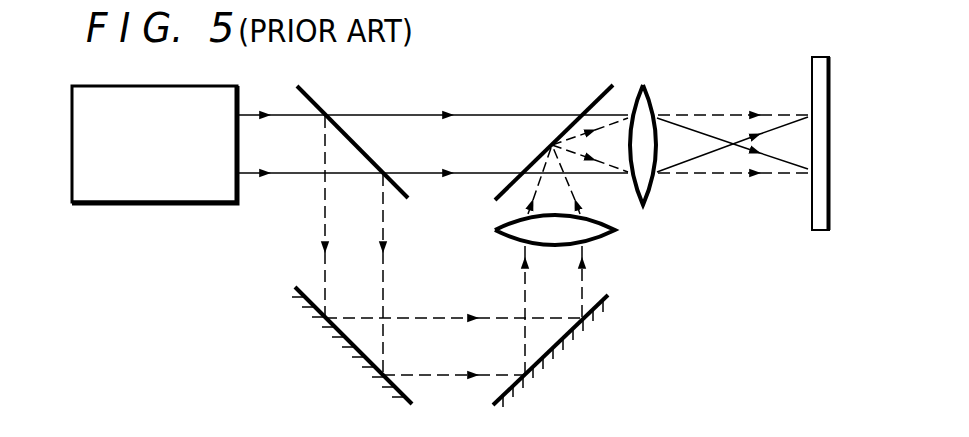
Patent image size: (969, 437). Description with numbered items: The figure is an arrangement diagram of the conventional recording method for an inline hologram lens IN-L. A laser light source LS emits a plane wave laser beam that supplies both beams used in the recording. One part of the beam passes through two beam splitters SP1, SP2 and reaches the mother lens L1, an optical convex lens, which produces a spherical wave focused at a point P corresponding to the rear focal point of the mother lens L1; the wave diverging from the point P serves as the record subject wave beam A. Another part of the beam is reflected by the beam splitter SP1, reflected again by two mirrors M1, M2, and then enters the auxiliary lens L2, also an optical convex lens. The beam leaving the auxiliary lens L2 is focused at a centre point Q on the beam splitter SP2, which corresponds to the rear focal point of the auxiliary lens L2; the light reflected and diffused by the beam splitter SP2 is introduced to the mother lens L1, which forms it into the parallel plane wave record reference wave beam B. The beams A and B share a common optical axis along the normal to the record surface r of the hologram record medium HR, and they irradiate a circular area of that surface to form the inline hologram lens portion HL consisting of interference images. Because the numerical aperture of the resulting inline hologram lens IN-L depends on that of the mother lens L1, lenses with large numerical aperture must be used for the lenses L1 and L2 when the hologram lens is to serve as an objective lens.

The laser light source LS is at (160, 204).
The beam splitter SP1 is at (316, 101).
The beam splitter SP2 is at (607, 86).
The centre point Q is at (548, 145).
The mother lens L1 is at (652, 103).
The auxiliary lens L2 is at (520, 242).
The mirror M1 is at (303, 294).
The mirror M2 is at (608, 296).
The focus point P is at (731, 140).
The record reference wave beam B is at (787, 88).
The record surface r is at (808, 78).
The hologram record medium HR is at (822, 57).
The record subject wave beam A is at (743, 147).
The inline hologram lens portion HL is at (810, 141).
The inline hologram lens IN-L is at (818, 233).